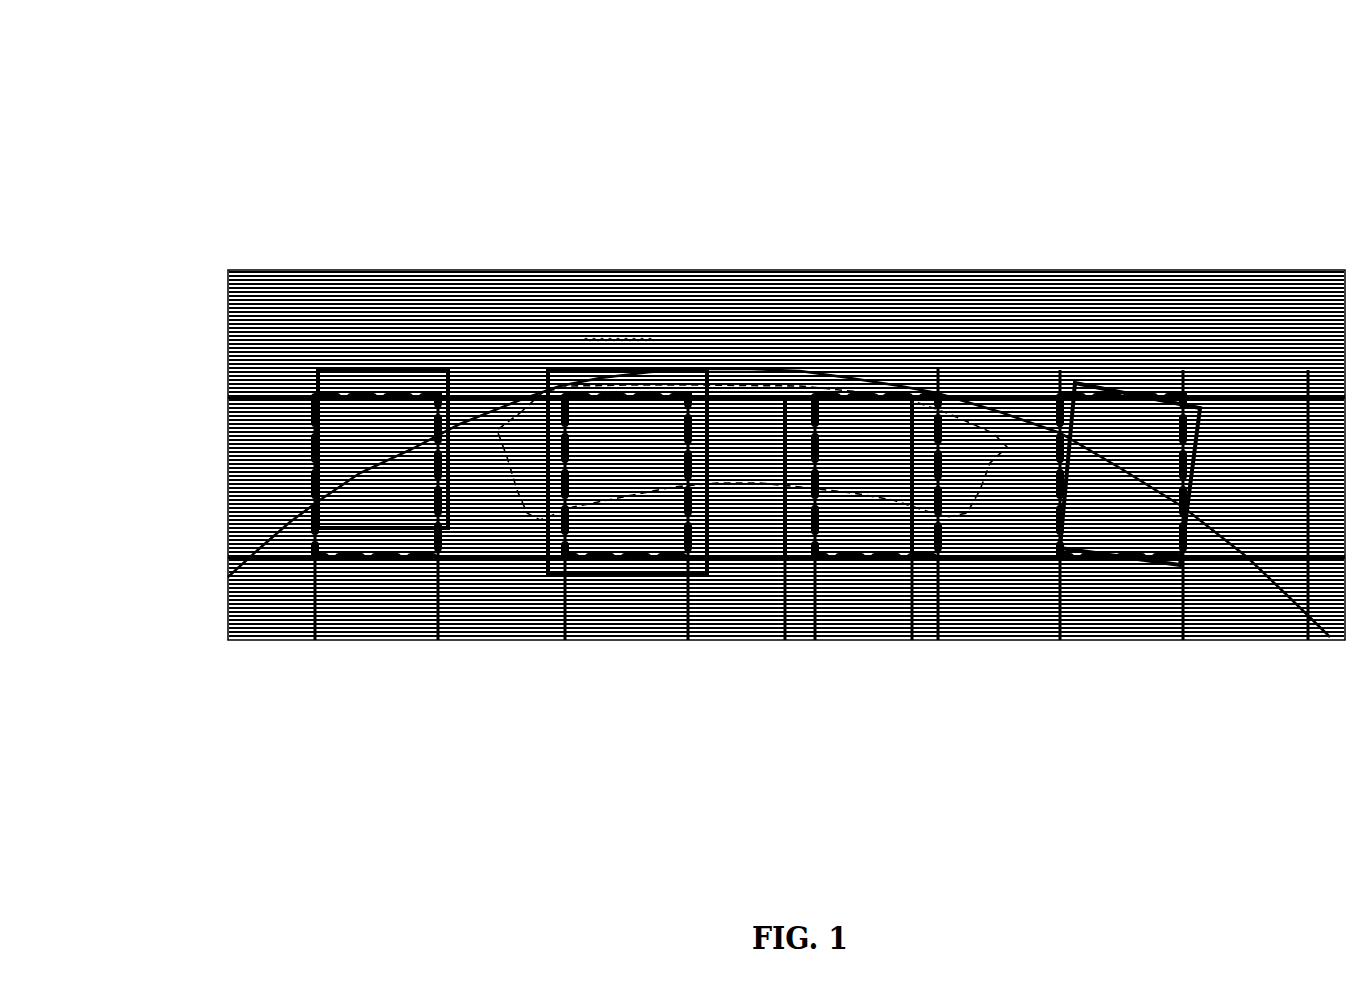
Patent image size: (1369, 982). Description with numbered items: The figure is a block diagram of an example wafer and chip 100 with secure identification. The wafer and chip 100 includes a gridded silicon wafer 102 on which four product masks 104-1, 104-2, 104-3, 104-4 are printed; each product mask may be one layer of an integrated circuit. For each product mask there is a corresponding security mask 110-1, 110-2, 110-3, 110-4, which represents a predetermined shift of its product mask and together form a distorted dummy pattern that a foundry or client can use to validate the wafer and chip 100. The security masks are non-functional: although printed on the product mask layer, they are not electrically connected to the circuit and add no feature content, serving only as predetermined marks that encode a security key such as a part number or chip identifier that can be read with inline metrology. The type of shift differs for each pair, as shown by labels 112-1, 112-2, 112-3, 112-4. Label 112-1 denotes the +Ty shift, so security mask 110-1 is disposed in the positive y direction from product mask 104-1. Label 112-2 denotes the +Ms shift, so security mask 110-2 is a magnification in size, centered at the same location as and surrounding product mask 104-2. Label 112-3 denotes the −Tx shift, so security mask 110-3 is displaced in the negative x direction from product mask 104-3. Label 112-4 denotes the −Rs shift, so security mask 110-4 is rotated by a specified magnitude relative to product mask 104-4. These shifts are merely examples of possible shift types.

The wafer and chip 100 is at (735, 380).
The gridded silicon wafer 102 is at (232, 482).
The product mask 104-1 is at (343, 557).
The product mask 104-2 is at (593, 557).
The product mask 104-3 is at (812, 522).
The product mask 104-4 is at (1077, 550).
The security mask 110-1 is at (377, 528).
The security mask 110-2 is at (712, 525).
The security mask 110-3 is at (910, 517).
The security mask 110-4 is at (1207, 410).
The label 112-1 is at (341, 302).
The label 112-2 is at (594, 307).
The label 112-3 is at (847, 314).
The label 112-4 is at (1098, 317).